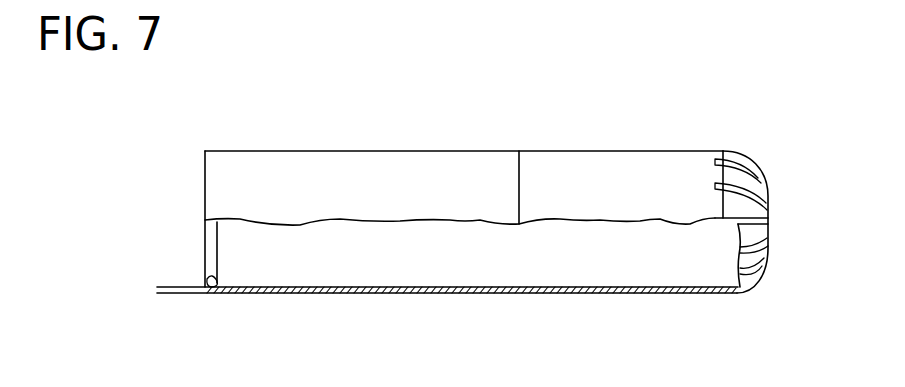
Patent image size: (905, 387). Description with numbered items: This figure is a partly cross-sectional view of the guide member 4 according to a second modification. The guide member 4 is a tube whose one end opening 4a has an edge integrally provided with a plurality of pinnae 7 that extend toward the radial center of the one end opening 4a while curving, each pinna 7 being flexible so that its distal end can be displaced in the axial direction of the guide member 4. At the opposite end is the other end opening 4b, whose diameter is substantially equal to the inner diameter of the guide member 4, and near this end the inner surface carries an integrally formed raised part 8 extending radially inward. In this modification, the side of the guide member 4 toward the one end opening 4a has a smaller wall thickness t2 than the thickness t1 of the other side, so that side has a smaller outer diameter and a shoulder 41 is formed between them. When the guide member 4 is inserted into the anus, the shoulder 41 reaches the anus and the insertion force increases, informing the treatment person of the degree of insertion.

The guide member 4 is at (282, 151).
The shoulder 41 is at (519, 150).
The one end opening 4a is at (748, 180).
The other end opening 4b is at (205, 222).
The pinnae 7 is at (737, 172).
The raised part 8 is at (207, 278).
The thickness of the other side t1 is at (171, 267).
The thickness of the one side t2 is at (545, 263).